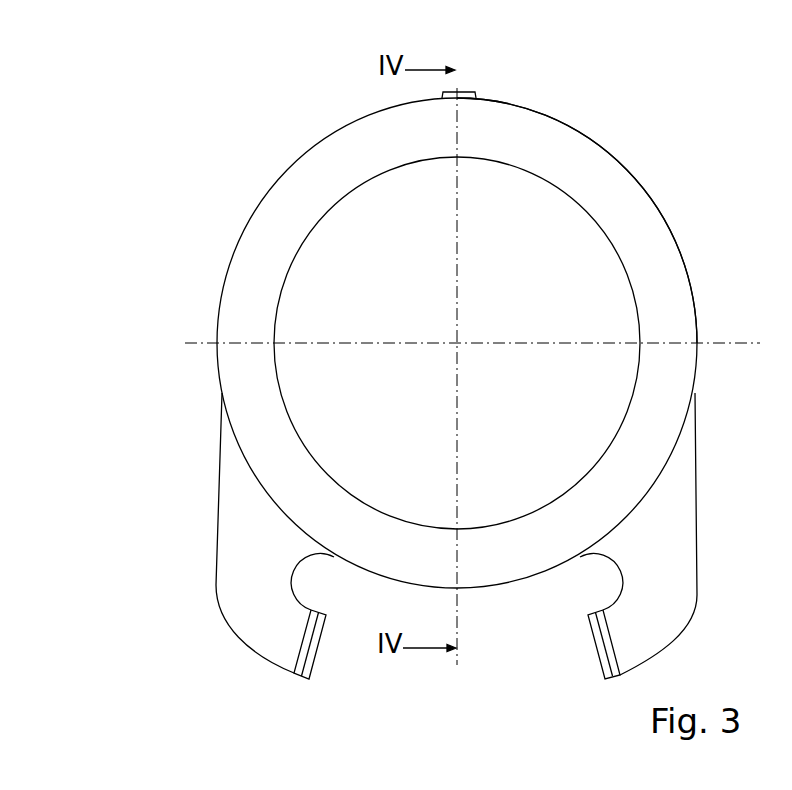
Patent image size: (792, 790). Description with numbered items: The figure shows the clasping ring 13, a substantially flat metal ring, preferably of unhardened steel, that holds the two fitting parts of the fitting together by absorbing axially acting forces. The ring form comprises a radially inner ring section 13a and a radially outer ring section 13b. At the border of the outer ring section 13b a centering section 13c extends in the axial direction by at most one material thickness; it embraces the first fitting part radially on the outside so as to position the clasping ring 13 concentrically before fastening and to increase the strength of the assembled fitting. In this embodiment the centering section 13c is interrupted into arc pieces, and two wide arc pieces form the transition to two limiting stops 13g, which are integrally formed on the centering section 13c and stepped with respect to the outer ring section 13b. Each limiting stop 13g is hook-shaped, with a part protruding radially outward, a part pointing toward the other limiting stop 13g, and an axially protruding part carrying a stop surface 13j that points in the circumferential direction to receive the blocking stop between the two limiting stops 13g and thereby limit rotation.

The clasping ring 13 is at (643, 181).
The inner ring section 13a is at (638, 278).
The outer ring section 13b is at (680, 300).
The centering section 13c is at (470, 97).
The limiting stops 13g is at (233, 596).
The stop surface 13j is at (317, 648).